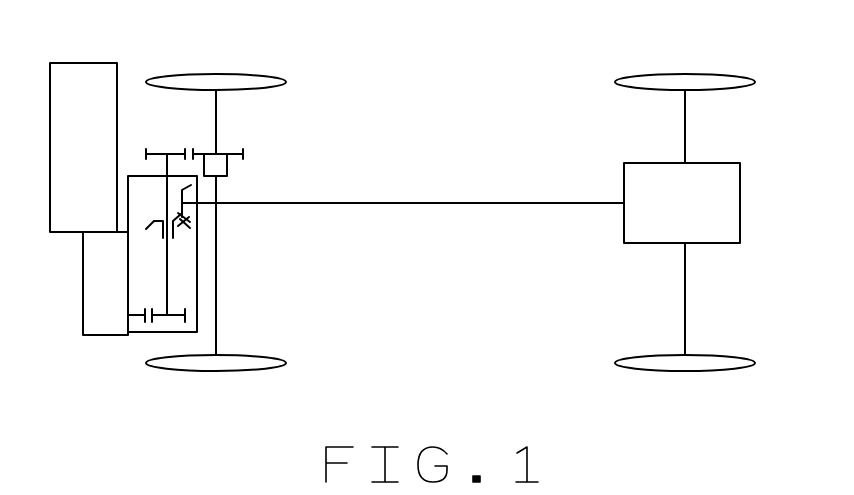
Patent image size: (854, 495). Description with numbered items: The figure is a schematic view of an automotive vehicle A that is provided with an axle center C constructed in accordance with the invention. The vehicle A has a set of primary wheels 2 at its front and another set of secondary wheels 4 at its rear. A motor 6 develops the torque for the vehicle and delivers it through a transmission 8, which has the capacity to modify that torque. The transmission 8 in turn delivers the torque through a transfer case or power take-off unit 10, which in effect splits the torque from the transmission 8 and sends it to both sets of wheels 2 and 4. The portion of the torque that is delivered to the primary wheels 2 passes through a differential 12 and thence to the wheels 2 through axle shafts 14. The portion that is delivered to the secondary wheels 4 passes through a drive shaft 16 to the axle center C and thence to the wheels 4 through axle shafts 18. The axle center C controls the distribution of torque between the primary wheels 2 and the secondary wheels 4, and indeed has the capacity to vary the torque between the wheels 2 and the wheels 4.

The primary wheels 2 is at (214, 82).
The secondary wheels 4 is at (672, 82).
The motor 6 is at (62, 155).
The transmission 8 is at (97, 295).
The transfer case or power take-off unit 10 is at (138, 175).
The differential 12 is at (222, 167).
The axle shafts 14 is at (218, 120).
The drive shaft 16 is at (373, 204).
The axle shafts 18 is at (685, 122).
The automotive vehicle A is at (133, 378).
The axle center C is at (610, 216).